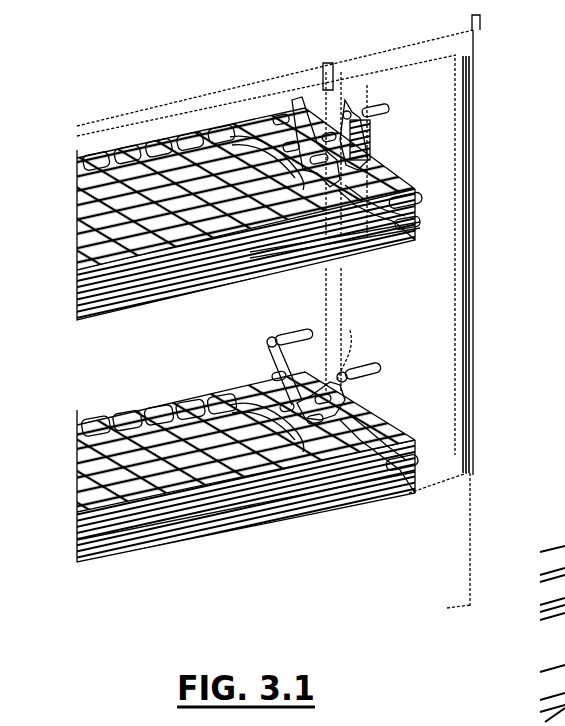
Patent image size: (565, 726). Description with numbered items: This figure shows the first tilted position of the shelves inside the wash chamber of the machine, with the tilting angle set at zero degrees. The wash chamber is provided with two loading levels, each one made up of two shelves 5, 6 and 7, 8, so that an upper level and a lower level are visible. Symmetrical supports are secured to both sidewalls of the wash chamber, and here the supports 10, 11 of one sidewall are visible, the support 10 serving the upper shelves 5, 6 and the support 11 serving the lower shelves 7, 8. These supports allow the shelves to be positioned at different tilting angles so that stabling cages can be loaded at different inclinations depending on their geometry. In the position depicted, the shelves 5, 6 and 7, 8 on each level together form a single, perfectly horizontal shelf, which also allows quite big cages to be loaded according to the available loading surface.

The shelf 5 is at (160, 180).
The shelf 6 is at (290, 240).
The shelf 7 is at (160, 430).
The shelf 8 is at (190, 495).
The support 10 is at (332, 167).
The support 11 is at (332, 428).